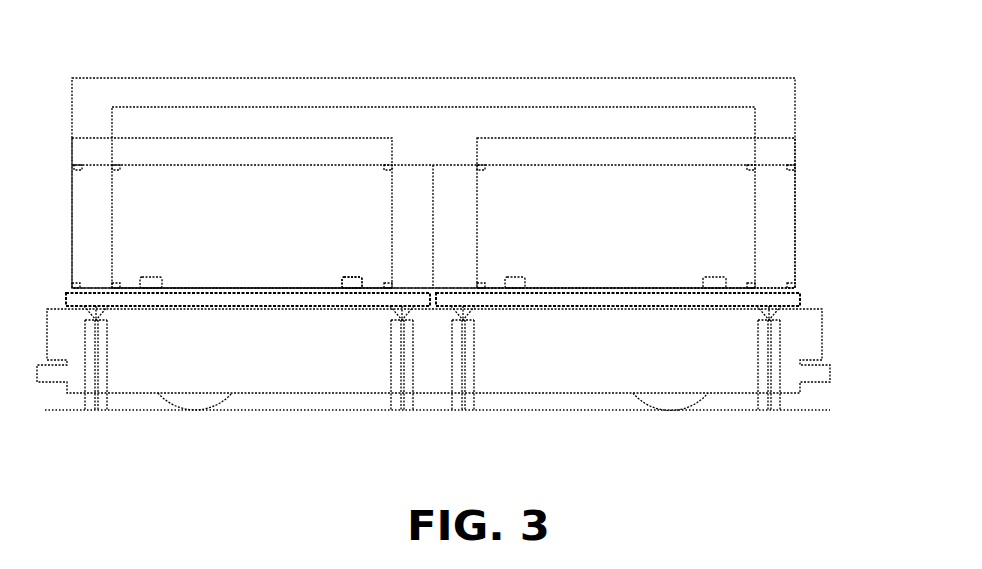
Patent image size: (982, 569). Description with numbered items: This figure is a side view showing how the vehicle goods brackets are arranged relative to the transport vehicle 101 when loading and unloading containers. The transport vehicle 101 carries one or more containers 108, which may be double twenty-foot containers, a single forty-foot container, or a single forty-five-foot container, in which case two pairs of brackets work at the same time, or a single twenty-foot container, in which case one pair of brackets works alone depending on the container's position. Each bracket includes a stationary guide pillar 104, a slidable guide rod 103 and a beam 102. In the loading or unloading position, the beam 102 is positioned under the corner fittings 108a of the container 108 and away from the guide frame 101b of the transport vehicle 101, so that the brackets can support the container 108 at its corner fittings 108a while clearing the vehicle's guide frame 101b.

The transport vehicle 101 is at (295, 343).
The guide frame 101b is at (355, 277).
The beam 102 is at (190, 300).
The slidable guide rod 103 is at (100, 318).
The stationary guide pillar 104 is at (93, 375).
The container 108 is at (584, 250).
The corner fittings 108a is at (480, 288).